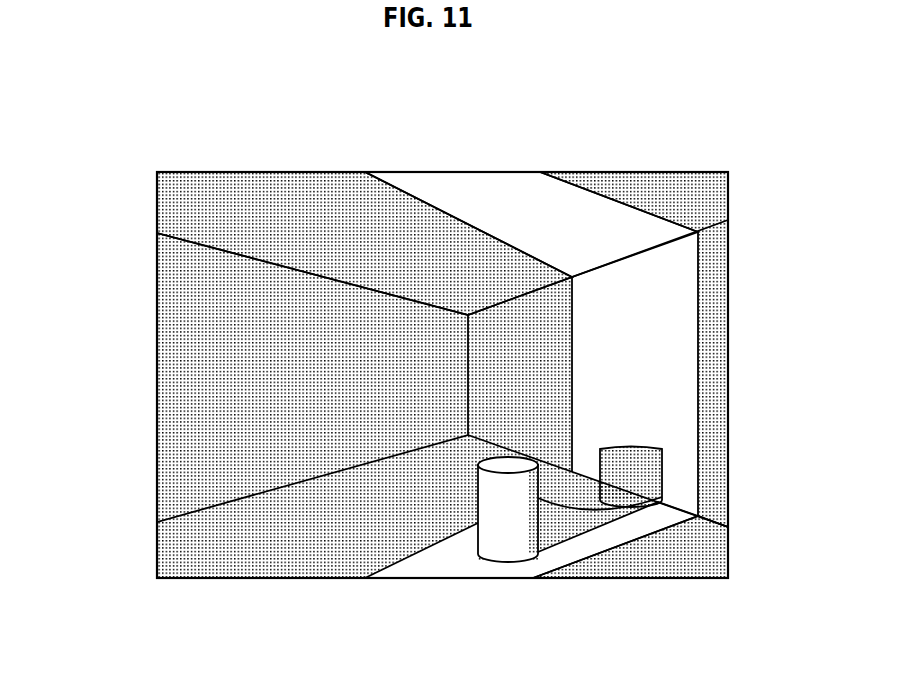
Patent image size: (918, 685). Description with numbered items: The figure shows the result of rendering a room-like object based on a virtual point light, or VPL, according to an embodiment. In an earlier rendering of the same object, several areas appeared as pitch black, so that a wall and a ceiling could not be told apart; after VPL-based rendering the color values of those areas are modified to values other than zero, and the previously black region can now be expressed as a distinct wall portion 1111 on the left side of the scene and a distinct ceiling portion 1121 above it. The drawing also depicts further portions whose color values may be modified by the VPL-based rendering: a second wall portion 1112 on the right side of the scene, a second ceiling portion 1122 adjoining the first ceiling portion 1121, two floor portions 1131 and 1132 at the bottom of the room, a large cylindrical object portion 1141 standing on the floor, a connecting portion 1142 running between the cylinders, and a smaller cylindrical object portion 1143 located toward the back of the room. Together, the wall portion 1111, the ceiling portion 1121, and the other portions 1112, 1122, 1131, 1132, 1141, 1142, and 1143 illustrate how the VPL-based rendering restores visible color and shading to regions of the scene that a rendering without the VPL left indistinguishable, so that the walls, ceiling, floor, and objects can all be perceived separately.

The wall portion 1111 is at (177, 378).
The portion 1112 is at (677, 300).
The ceiling portion 1121 is at (262, 190).
The portion 1122 is at (468, 190).
The portion 1131 is at (433, 568).
The portion 1132 is at (650, 568).
The portion 1141 is at (497, 545).
The portion 1142 is at (662, 497).
The portion 1143 is at (655, 454).